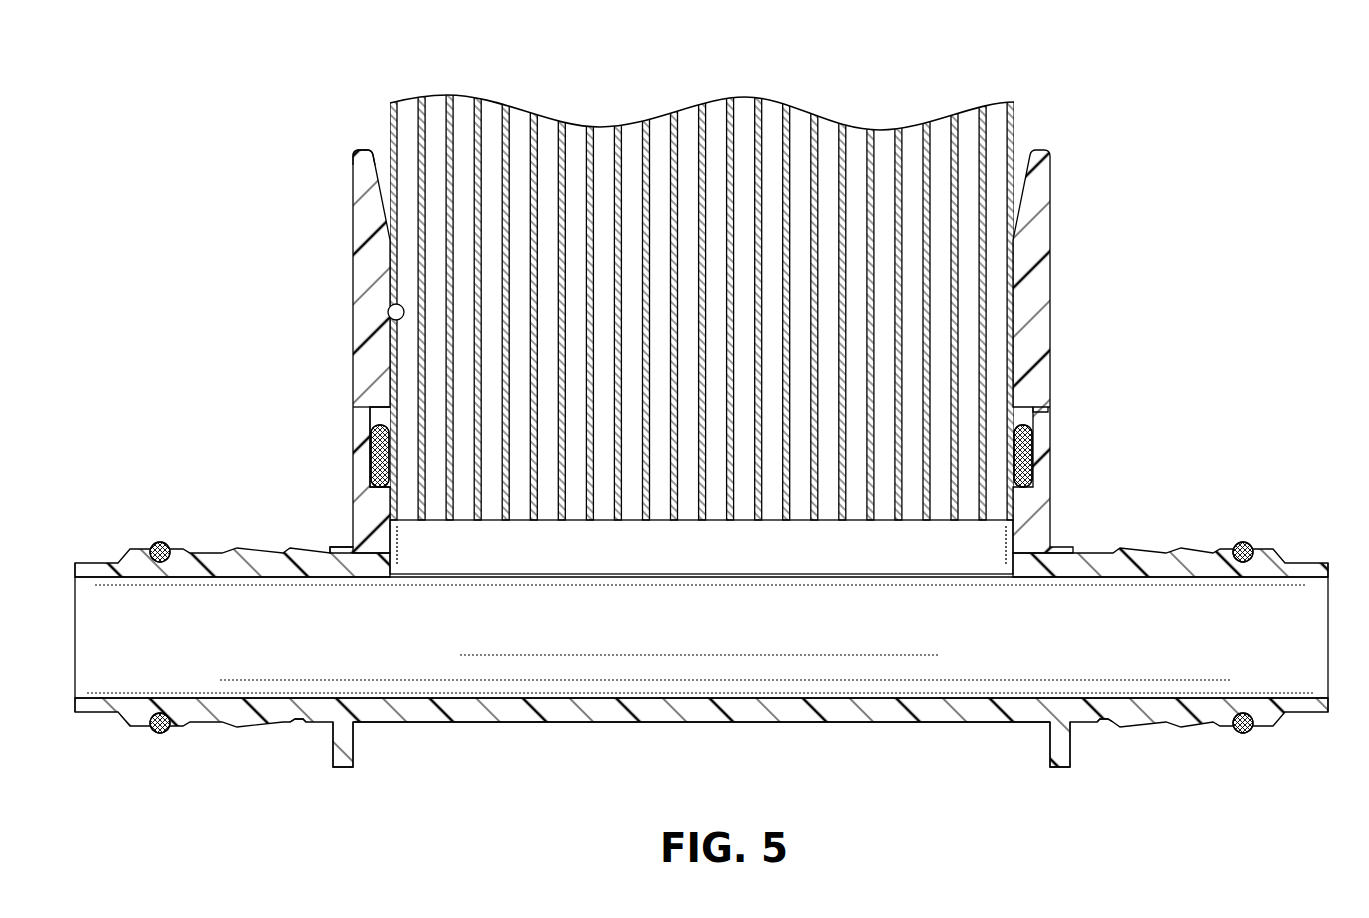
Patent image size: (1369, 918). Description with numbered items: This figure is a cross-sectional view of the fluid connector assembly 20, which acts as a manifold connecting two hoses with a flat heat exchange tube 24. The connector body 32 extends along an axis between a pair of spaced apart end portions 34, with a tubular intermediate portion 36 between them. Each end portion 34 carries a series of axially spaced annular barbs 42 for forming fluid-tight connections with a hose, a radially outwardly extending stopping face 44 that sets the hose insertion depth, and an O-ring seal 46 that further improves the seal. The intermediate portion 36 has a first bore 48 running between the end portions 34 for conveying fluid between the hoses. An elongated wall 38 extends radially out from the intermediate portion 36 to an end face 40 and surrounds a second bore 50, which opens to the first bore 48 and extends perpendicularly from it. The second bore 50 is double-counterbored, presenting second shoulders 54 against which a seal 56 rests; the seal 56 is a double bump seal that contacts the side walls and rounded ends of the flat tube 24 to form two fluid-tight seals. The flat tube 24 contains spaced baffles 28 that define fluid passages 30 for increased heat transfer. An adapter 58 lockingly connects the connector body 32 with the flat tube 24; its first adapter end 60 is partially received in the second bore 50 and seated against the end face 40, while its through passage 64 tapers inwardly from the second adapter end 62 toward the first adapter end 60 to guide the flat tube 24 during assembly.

The fluid connector assembly 20 is at (1100, 302).
The heat exchange tube 24 is at (1017, 123).
The baffles 28 is at (536, 103).
The fluid passages 30 is at (633, 130).
The connector body 32 is at (470, 732).
The end portions 34 is at (302, 732).
The intermediate portion 36 is at (862, 705).
The elongated wall 38 is at (1033, 507).
The end face 40 is at (1044, 403).
The annular barbs 42 is at (278, 550).
The stopping face 44 is at (334, 752).
The O-ring seal 46 is at (158, 733).
The first bore 48 is at (789, 623).
The second bore 50 is at (737, 556).
The second shoulders 54 is at (370, 472).
The seal 56 is at (370, 463).
The adapter 58 is at (350, 253).
The first adapter end 60 is at (358, 405).
The second adapter end 62 is at (368, 150).
The through passage 64 is at (388, 316).